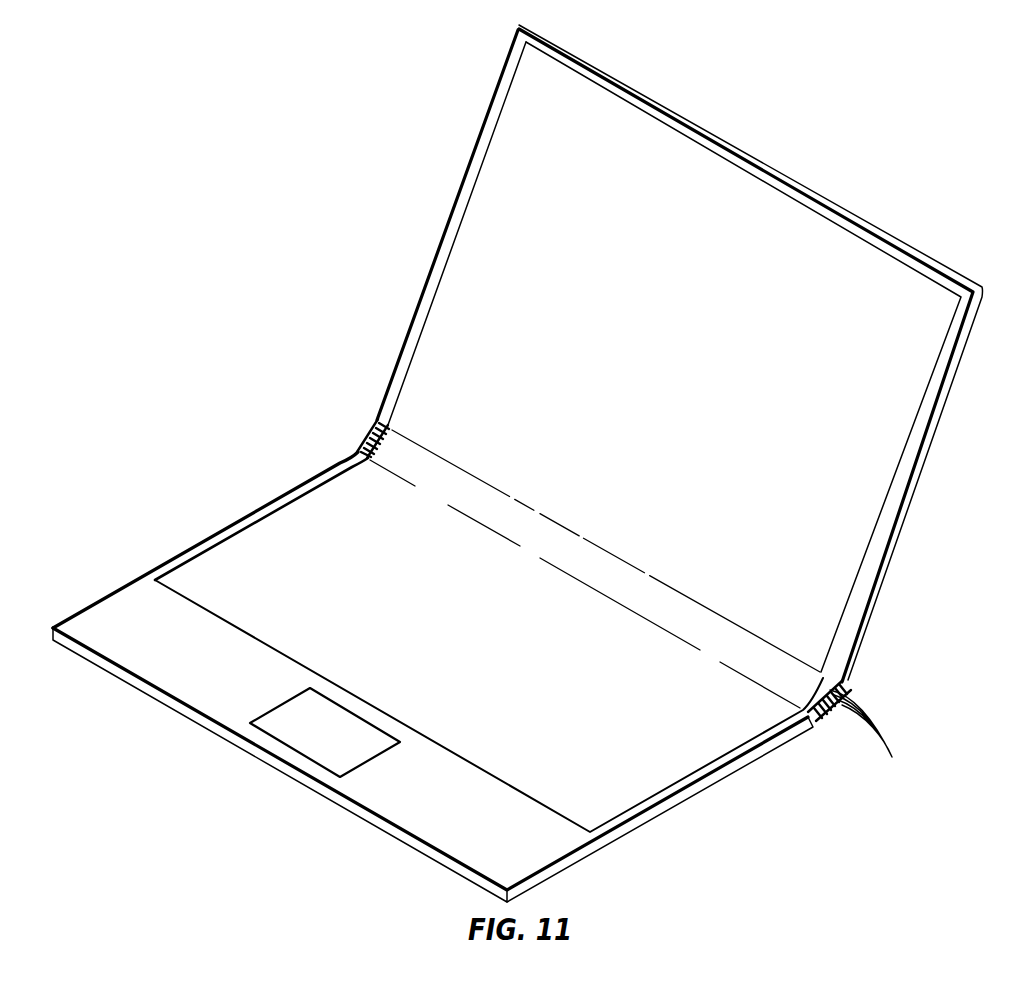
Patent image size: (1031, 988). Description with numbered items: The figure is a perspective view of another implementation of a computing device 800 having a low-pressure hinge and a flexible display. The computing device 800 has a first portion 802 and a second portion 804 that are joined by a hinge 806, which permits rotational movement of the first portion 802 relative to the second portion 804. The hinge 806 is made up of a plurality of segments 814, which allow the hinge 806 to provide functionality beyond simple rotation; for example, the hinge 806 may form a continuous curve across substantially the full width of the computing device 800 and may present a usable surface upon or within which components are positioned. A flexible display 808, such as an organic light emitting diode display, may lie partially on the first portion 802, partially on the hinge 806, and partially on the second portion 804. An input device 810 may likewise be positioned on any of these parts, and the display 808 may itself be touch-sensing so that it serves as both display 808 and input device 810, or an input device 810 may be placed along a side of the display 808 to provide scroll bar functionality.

The computing device 800 is at (537, 463).
The first portion 802 is at (953, 365).
The second portion 804 is at (438, 677).
The hinge 806 is at (855, 685).
The flexible display 808 is at (893, 408).
The input device 810 is at (312, 740).
The segments 814 is at (879, 730).